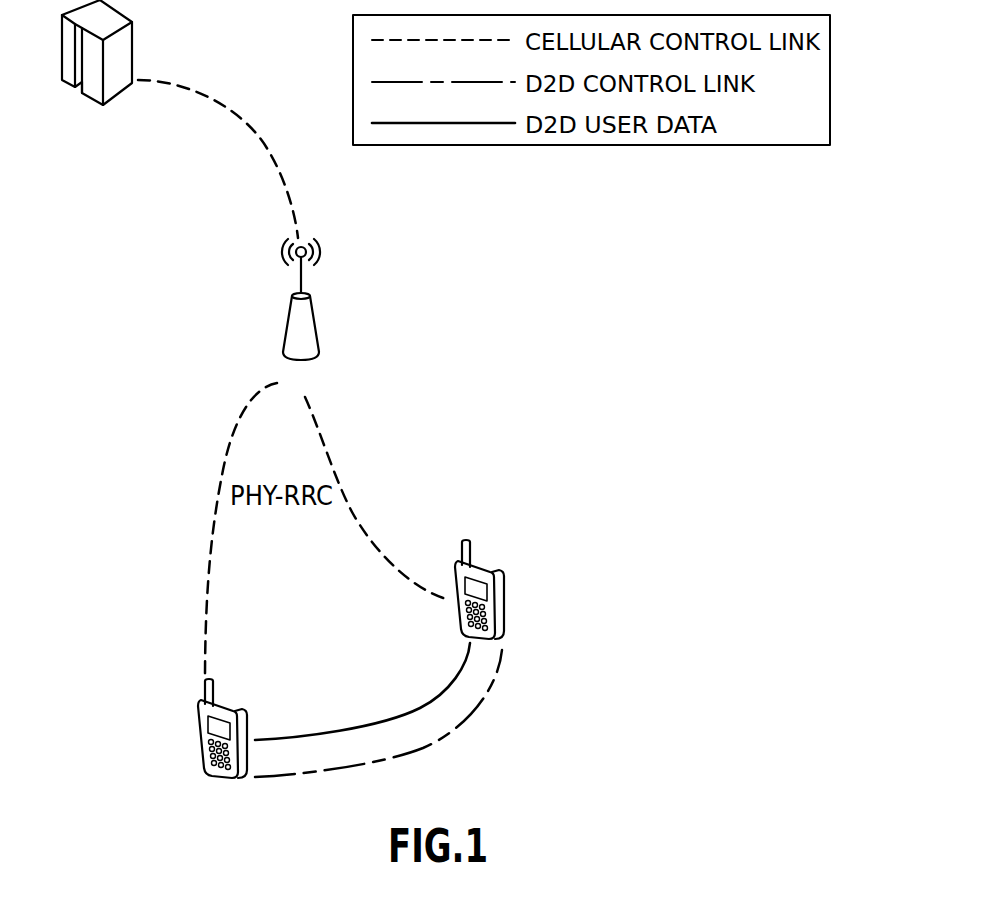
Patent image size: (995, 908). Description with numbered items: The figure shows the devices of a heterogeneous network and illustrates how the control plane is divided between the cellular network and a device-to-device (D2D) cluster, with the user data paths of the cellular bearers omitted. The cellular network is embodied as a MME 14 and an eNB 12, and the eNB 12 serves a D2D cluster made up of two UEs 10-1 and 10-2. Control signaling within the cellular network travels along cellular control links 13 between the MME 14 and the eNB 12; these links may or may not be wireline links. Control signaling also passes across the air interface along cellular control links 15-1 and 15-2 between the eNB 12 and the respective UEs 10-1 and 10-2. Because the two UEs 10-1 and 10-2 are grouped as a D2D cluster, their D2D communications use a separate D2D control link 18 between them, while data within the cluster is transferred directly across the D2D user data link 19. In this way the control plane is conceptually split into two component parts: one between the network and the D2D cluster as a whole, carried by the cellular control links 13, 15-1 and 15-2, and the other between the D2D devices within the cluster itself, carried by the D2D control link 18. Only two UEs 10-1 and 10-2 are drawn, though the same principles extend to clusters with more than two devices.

The MME 14 is at (133, 60).
The cellular control links 13 is at (253, 132).
The eNB 12 is at (318, 323).
The cellular control link 15-1 is at (202, 600).
The cellular control link 15-2 is at (377, 547).
The UE 10-1 is at (200, 735).
The UE 10-2 is at (502, 605).
The D2D user data link 19 is at (424, 707).
The D2D control link 18 is at (450, 738).